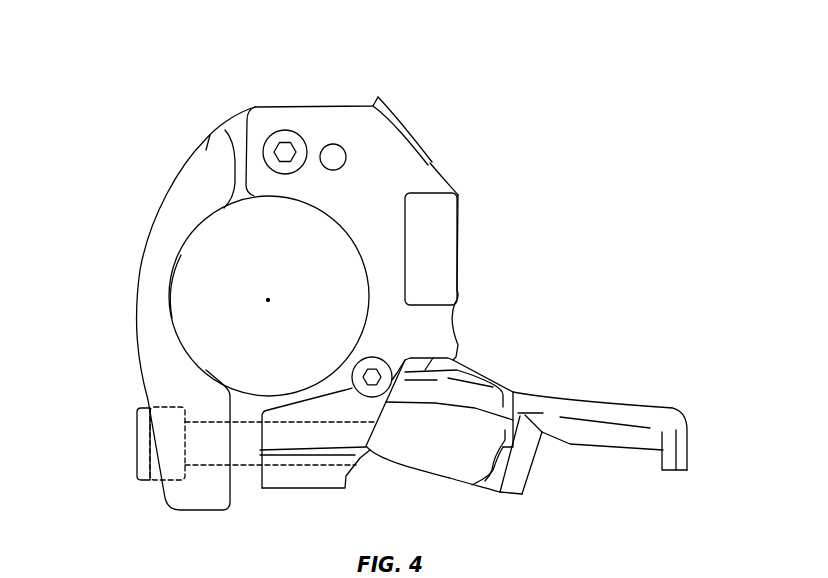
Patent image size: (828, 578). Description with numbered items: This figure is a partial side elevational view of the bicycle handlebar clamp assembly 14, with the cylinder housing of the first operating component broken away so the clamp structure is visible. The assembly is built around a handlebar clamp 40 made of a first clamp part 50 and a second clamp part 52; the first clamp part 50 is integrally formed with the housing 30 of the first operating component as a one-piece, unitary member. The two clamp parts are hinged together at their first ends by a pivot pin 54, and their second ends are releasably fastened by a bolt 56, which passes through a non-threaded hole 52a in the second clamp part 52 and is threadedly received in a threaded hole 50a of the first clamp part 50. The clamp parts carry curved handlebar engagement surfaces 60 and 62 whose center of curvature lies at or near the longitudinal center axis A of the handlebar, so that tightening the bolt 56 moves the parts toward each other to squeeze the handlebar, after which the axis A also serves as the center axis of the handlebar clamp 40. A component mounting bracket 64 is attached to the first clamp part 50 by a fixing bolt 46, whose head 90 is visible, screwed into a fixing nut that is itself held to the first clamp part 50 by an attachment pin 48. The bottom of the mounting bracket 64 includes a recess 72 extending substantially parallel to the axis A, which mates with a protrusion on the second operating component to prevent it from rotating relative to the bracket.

The bicycle handlebar clamp assembly 14 is at (124, 139).
The housing 30 is at (438, 175).
The handlebar clamp 40 is at (320, 55).
The second clamp part 52 is at (207, 137).
The first clamp part 50 is at (357, 153).
The pivot pin 54 is at (283, 174).
The handlebar engagement surface 60 is at (367, 300).
The handlebar engagement surface 62 is at (177, 272).
The longitudinal center axis A is at (268, 300).
The attachment pin 48 is at (352, 393).
The bolt 56 is at (138, 465).
The non-threaded hole 52a is at (198, 467).
The threaded hole 50a is at (300, 467).
The fixing bolt 46 is at (511, 490).
The head 90 is at (497, 487).
The component mounting bracket 64 is at (556, 398).
The recess 72 is at (645, 455).